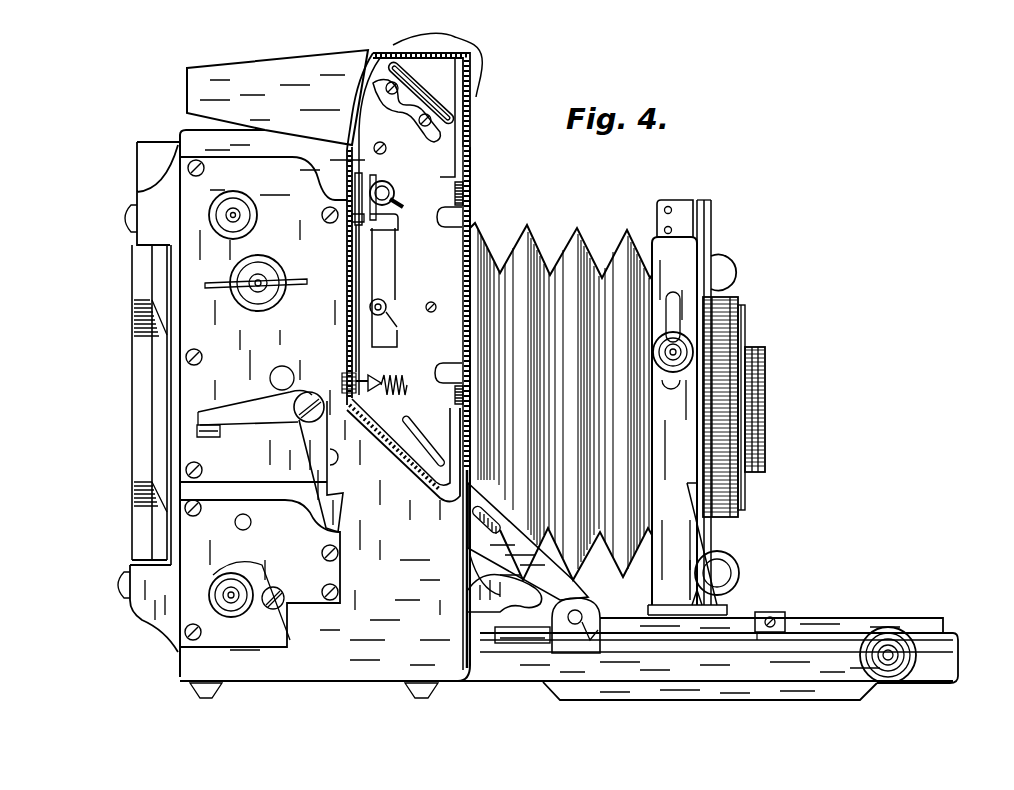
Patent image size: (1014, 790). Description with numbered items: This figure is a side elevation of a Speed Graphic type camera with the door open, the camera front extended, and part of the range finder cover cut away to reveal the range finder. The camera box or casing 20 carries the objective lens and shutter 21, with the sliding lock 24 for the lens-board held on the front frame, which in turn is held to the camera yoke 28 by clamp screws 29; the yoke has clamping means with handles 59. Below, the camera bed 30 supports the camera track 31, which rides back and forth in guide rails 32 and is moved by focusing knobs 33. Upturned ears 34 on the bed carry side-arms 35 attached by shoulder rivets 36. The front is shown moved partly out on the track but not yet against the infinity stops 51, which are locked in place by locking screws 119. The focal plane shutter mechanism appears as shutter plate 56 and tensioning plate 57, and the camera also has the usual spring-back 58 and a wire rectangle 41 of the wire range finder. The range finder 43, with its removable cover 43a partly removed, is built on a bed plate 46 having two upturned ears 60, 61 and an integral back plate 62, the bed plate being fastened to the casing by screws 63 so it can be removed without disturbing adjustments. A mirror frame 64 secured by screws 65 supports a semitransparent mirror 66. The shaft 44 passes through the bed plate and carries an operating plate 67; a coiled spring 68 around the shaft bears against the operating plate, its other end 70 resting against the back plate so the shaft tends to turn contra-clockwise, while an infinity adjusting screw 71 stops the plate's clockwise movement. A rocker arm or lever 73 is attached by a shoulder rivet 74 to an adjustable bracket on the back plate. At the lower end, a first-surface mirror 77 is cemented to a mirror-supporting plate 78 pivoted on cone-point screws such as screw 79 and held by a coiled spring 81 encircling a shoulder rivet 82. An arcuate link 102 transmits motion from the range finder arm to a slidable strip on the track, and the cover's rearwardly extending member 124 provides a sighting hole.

The camera box or casing 20 is at (324, 682).
The objective lens and shutter 21 is at (735, 328).
The sliding lock for the lens-board 24 is at (723, 270).
The camera yoke 28 is at (693, 540).
The clamp screws 29 is at (680, 366).
The camera bed 30 is at (832, 684).
The camera track 31 is at (918, 618).
The guide rails 32 is at (953, 637).
The focusing knobs 33 is at (889, 682).
The upturned ears 34 is at (572, 643).
The side-arms 35 is at (560, 588).
The shoulder rivets 36 is at (587, 640).
The wire rectangle 41 is at (710, 250).
The range finder 43 is at (478, 50).
The removable cover 43a is at (470, 128).
The shaft 44 is at (386, 186).
The range finder bed plate 46 is at (455, 245).
The infinity stops 51 is at (783, 613).
The shutter plate 56 is at (190, 268).
The tensioning plate 57 is at (190, 536).
The spring-back 58 is at (143, 383).
The handles 59 is at (740, 573).
The upturned ear 60 is at (456, 192).
The upturned ear 61 is at (458, 393).
The back plate 62 is at (356, 290).
The screws 63 is at (384, 151).
The mirror frame 64 is at (428, 130).
The screws 65 is at (415, 118).
The semitransparent mirror 66 is at (422, 88).
The operating plate 67 is at (390, 237).
The coiled spring 68 is at (392, 199).
The other end of coiled spring 70 is at (367, 202).
The infinity adjusting screw 71 is at (360, 217).
The rocker arm or lever 73 is at (393, 260).
The shoulder rivet 74 is at (367, 308).
The first-surface mirror 77 is at (426, 442).
The mirror-supporting plate 78 is at (397, 412).
The cone-point screw 79 is at (340, 377).
The coiled spring 81 is at (379, 379).
The shoulder rivet 82 is at (401, 386).
The arcuate link 102 is at (482, 598).
The locking screws 119 is at (762, 630).
The rearwardly extending member 124 is at (279, 71).